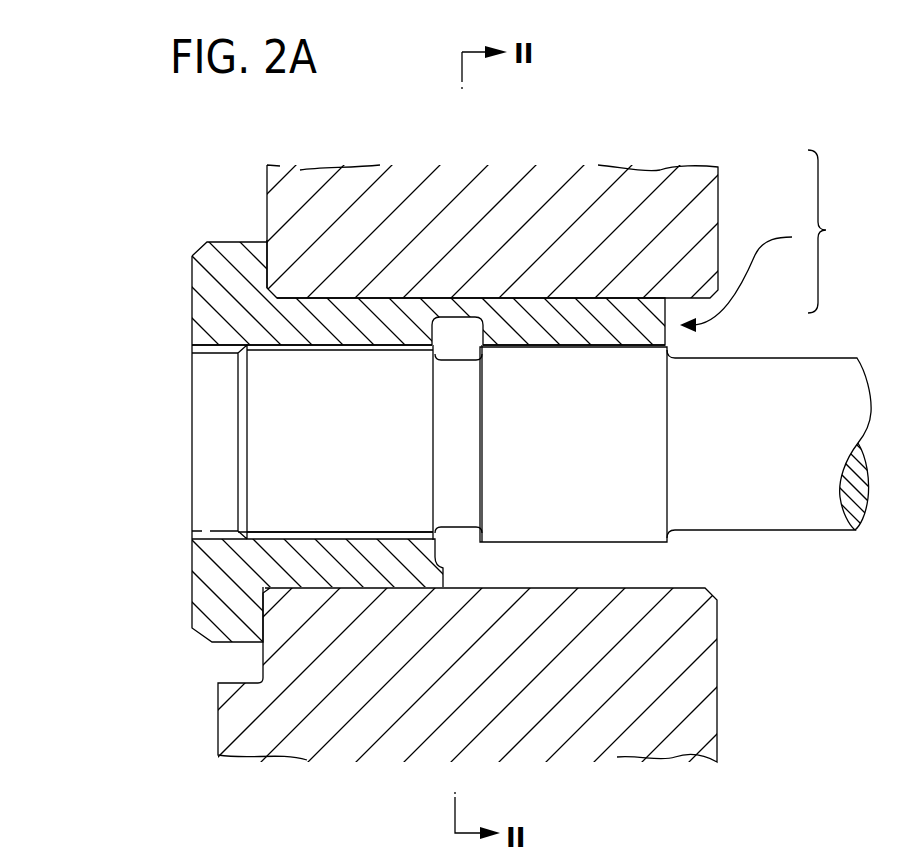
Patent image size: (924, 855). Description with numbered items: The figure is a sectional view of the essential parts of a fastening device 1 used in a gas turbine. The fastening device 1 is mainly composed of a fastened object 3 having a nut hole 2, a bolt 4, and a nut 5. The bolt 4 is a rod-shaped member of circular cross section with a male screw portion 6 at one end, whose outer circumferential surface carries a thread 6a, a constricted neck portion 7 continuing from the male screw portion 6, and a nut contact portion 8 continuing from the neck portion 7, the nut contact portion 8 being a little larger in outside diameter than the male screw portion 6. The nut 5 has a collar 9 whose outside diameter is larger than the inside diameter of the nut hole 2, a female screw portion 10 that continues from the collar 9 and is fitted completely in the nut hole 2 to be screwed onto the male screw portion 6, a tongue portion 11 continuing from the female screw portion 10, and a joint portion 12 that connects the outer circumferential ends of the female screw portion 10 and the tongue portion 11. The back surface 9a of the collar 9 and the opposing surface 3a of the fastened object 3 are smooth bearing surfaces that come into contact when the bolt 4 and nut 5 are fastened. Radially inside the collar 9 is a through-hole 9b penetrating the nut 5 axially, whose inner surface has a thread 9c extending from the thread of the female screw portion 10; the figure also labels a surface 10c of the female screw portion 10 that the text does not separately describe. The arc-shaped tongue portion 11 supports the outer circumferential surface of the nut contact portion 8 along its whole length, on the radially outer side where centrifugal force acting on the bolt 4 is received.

The fastening device 1 is at (826, 231).
The nut hole 2 is at (683, 588).
The fastened object 3 is at (712, 207).
The surface of the fastened object 3a is at (270, 281).
The bolt 4 is at (783, 376).
The nut 5 is at (745, 273).
The male screw portion 6 is at (273, 388).
The thread of the male screw portion 6a is at (338, 347).
The neck portion 7 is at (450, 457).
The nut contact portion 8 is at (643, 457).
The collar 9 is at (237, 247).
The back surface of the collar 9a is at (268, 257).
The through-hole 9b is at (213, 442).
The thread of the through-hole 9c is at (218, 533).
The female screw portion 10 is at (433, 577).
The retaining ring contact surface 10c is at (327, 532).
The tongue portion 11 is at (555, 337).
The joint portion 12 is at (462, 312).